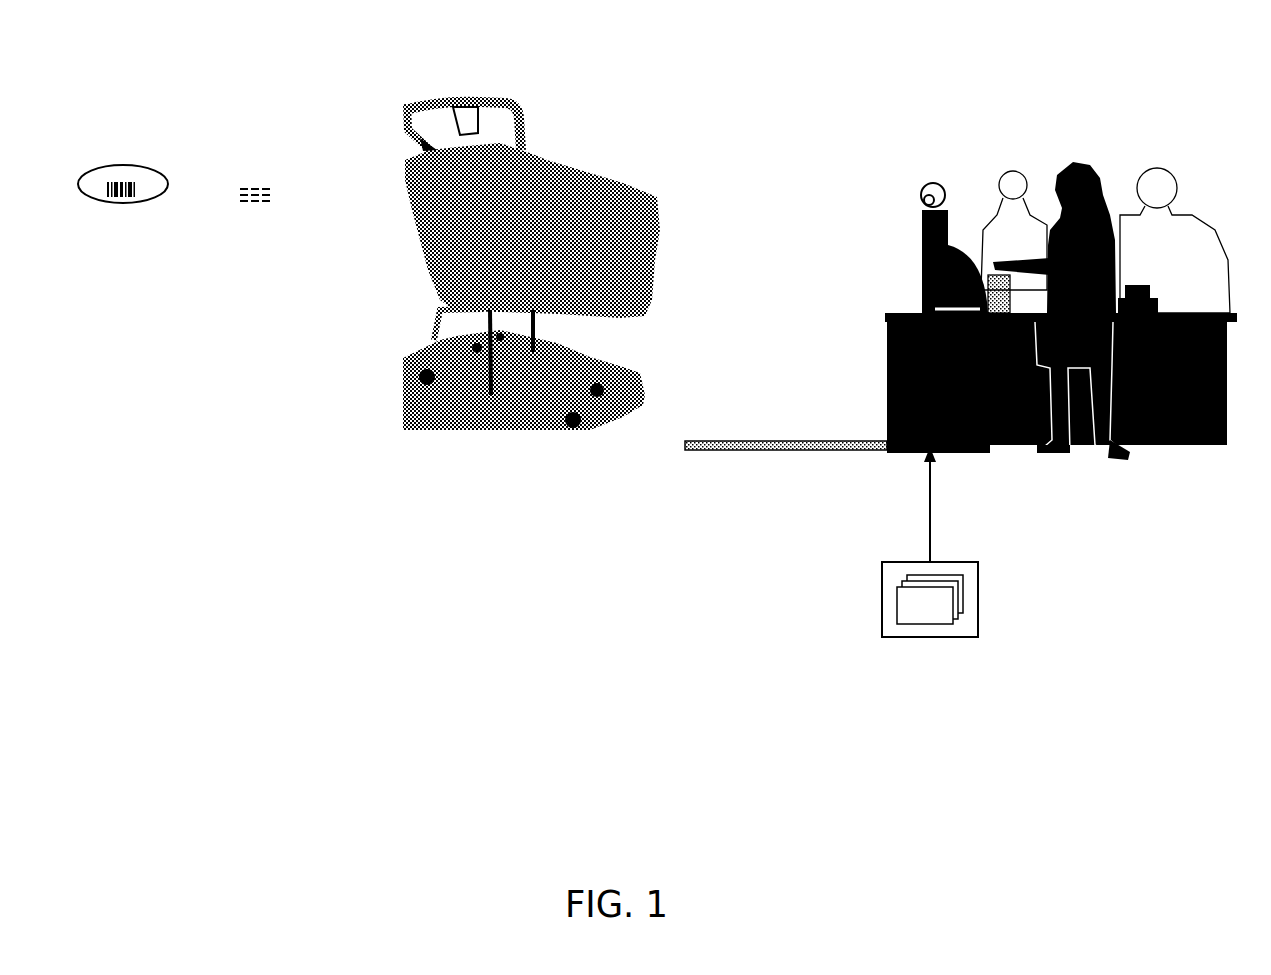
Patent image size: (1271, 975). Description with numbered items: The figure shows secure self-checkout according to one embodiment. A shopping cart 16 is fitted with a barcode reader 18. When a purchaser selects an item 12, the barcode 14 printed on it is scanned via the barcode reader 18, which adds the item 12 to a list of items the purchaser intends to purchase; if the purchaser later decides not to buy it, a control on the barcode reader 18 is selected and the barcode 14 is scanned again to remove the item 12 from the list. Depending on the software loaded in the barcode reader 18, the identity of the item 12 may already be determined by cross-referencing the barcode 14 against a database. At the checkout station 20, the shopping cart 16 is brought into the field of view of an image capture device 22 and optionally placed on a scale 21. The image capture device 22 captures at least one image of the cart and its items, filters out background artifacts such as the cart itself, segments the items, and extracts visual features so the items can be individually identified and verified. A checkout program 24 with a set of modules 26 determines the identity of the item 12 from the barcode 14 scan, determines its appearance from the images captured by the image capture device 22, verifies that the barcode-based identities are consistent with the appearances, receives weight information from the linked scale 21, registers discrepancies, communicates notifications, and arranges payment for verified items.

The item 12 is at (121, 165).
The barcode 14 is at (121, 203).
The shopping cart 16 is at (408, 115).
The barcode reader 18 is at (469, 118).
The checkout station 20 is at (1037, 76).
The scale 21 is at (767, 441).
The image capture device 22 is at (933, 183).
The checkout program 24 is at (979, 571).
The set of modules 26 is at (965, 605).